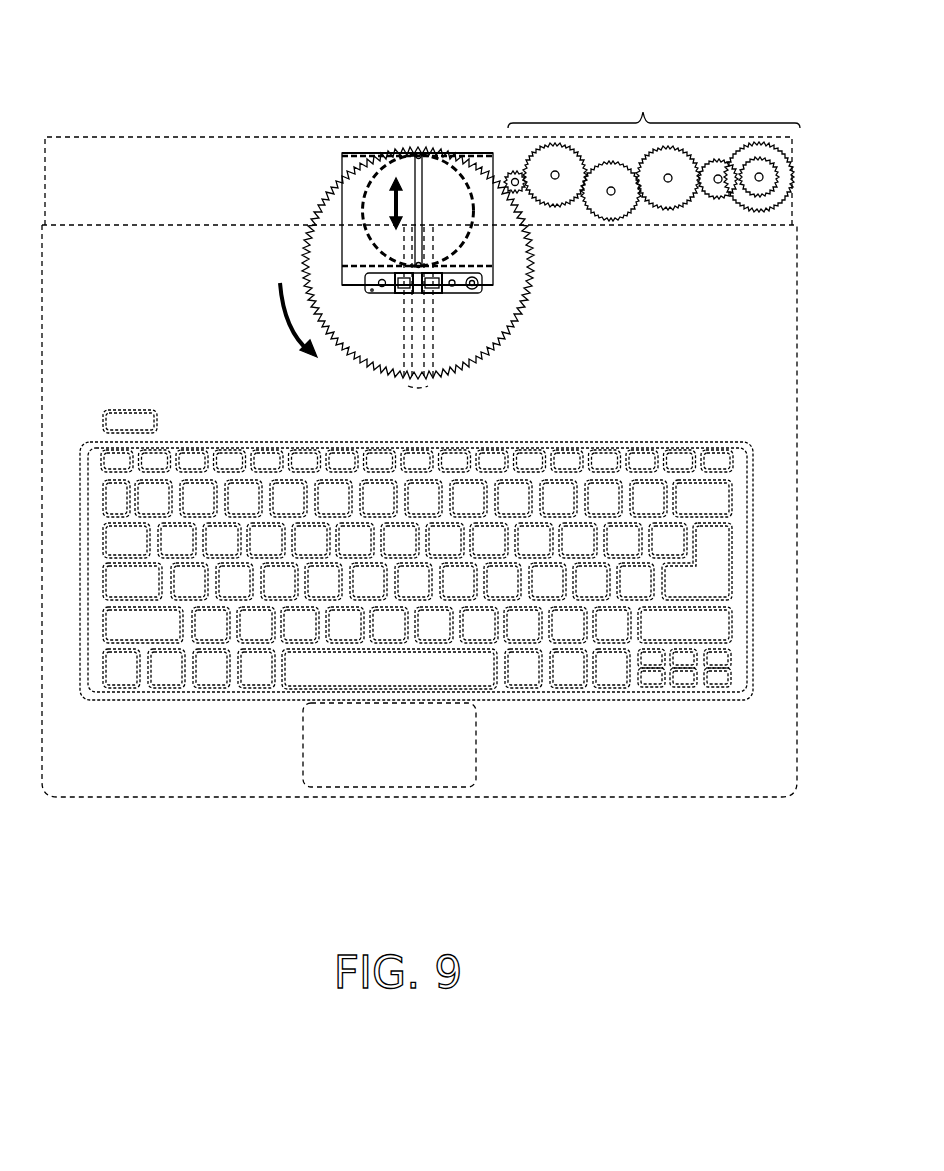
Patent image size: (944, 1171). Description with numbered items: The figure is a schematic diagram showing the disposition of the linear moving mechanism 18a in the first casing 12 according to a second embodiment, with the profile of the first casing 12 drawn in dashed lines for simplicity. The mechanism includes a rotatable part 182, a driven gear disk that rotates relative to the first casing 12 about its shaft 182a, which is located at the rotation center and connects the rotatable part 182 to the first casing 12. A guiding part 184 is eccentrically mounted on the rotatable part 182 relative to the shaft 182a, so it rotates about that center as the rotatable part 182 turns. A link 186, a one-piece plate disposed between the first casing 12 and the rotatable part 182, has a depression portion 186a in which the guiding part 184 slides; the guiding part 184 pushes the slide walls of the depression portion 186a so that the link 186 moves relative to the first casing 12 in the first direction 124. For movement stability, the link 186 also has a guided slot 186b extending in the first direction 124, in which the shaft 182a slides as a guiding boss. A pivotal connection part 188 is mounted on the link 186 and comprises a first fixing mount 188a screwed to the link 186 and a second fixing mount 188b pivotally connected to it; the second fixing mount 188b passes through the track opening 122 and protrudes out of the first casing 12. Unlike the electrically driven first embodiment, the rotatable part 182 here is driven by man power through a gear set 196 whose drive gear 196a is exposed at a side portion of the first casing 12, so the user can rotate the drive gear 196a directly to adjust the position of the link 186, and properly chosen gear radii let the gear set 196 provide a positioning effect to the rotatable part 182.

The first casing 12 is at (138, 150).
The linear moving mechanism 18a is at (409, 213).
The track opening 122 is at (445, 352).
The first direction 124 is at (390, 200).
The rotatable part 182 is at (507, 302).
The shaft 182a is at (416, 262).
The guiding part 184 is at (343, 213).
The link 186 is at (482, 250).
The depression portion 186a is at (367, 133).
The guided slot 186b is at (448, 170).
The pivotal connection part 188 is at (342, 430).
The first fixing mount 188a is at (418, 294).
The second fixing mount 188b is at (390, 293).
The gear set 196 is at (688, 154).
The drive gear 196a is at (783, 190).